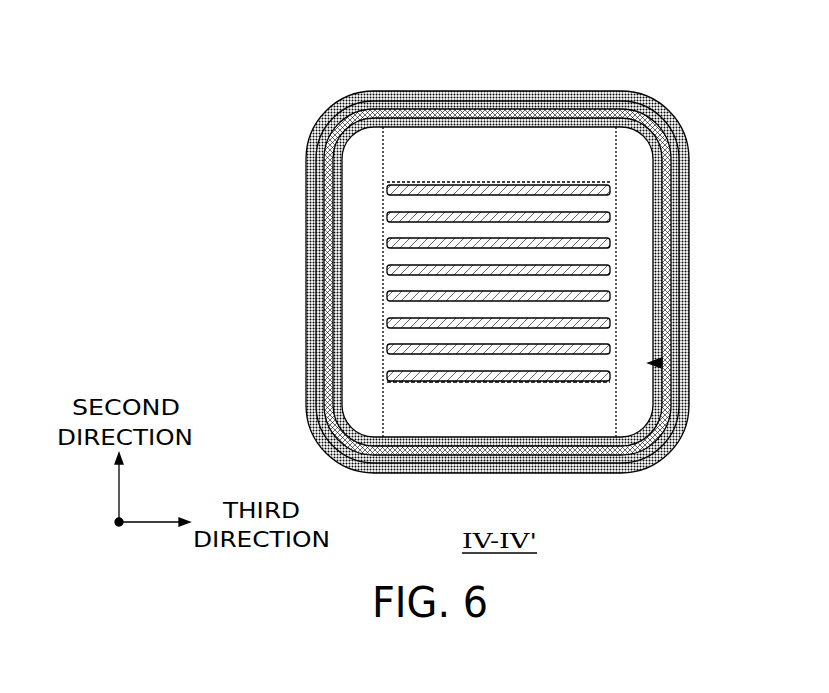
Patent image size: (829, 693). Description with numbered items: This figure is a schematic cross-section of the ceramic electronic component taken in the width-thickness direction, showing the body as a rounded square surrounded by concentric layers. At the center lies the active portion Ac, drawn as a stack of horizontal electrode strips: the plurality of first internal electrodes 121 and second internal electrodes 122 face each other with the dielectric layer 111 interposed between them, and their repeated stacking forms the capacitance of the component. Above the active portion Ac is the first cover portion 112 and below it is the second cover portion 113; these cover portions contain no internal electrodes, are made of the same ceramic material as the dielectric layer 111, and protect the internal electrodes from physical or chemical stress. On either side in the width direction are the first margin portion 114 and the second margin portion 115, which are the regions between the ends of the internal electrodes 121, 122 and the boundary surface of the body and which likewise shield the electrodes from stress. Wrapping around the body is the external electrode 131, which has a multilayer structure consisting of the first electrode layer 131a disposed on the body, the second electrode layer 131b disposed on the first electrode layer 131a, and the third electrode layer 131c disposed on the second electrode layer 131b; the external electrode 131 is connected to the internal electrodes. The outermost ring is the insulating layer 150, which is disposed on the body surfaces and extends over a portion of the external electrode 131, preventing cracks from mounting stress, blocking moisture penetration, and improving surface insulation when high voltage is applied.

The dielectric layer 111 is at (425, 193).
The first cover portion 112 is at (463, 145).
The second cover portion 113 is at (462, 417).
The first margin portion 114 is at (365, 366).
The second margin portion 115 is at (640, 281).
The first internal electrode 121 is at (531, 188).
The second internal electrode 122 is at (575, 268).
The external electrode 131 is at (421, 282).
The first electrode layer 131a is at (313, 256).
The second electrode layer 131b is at (323, 284).
The third electrode layer 131c is at (332, 313).
The insulating layer 150 is at (688, 236).
The active portion Ac is at (660, 364).